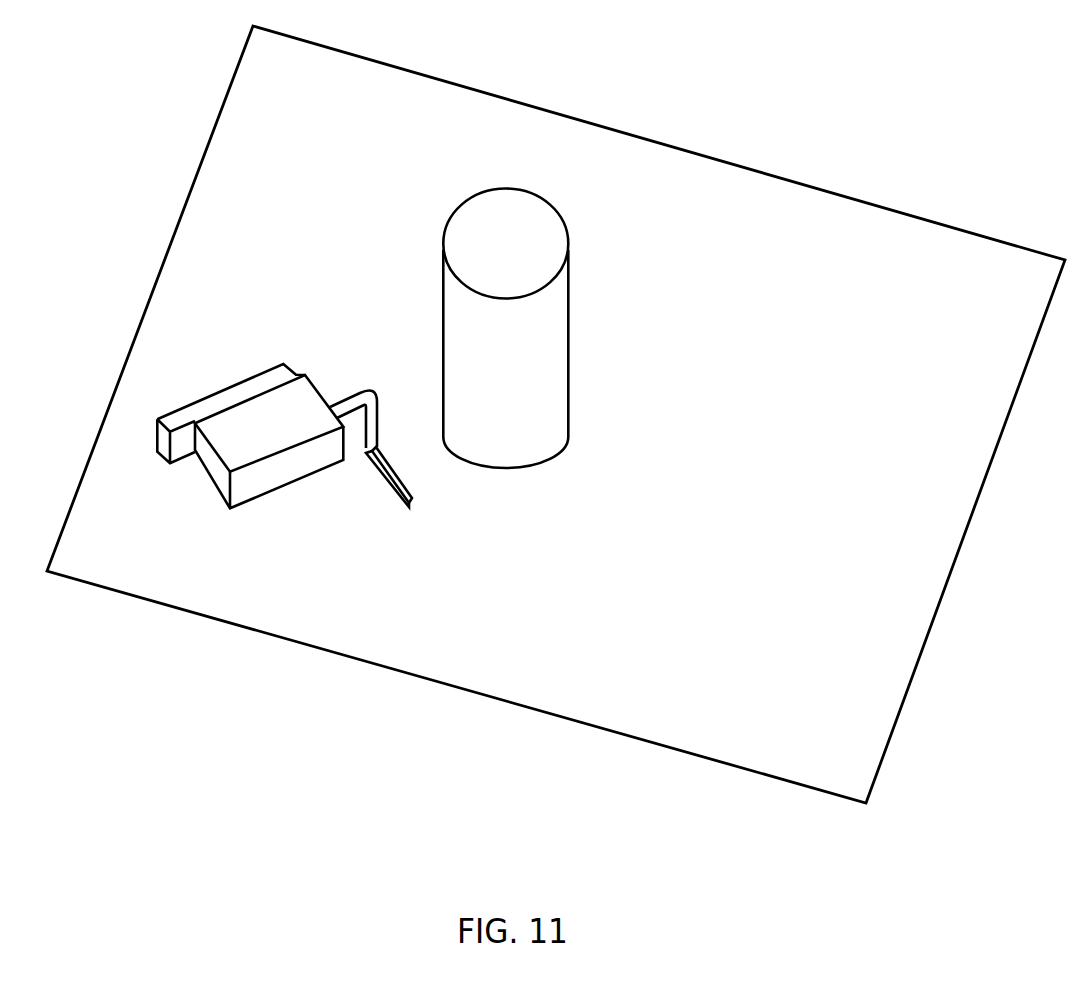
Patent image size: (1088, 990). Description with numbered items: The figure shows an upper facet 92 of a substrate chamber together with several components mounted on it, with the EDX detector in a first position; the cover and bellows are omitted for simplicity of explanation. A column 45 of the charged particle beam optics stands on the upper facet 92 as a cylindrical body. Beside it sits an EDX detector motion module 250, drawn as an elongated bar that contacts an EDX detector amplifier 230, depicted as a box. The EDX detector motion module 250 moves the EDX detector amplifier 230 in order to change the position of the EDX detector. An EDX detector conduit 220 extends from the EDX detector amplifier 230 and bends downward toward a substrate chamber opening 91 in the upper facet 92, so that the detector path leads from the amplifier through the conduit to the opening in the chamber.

The upper facet of substrate chamber 92 is at (936, 418).
The column 45 is at (443, 232).
The EDX detector motion module 250 is at (222, 388).
The EDX detector amplifier 230 is at (270, 472).
The EDX detector conduit 220 is at (360, 408).
The substrate chamber opening 91 is at (398, 505).